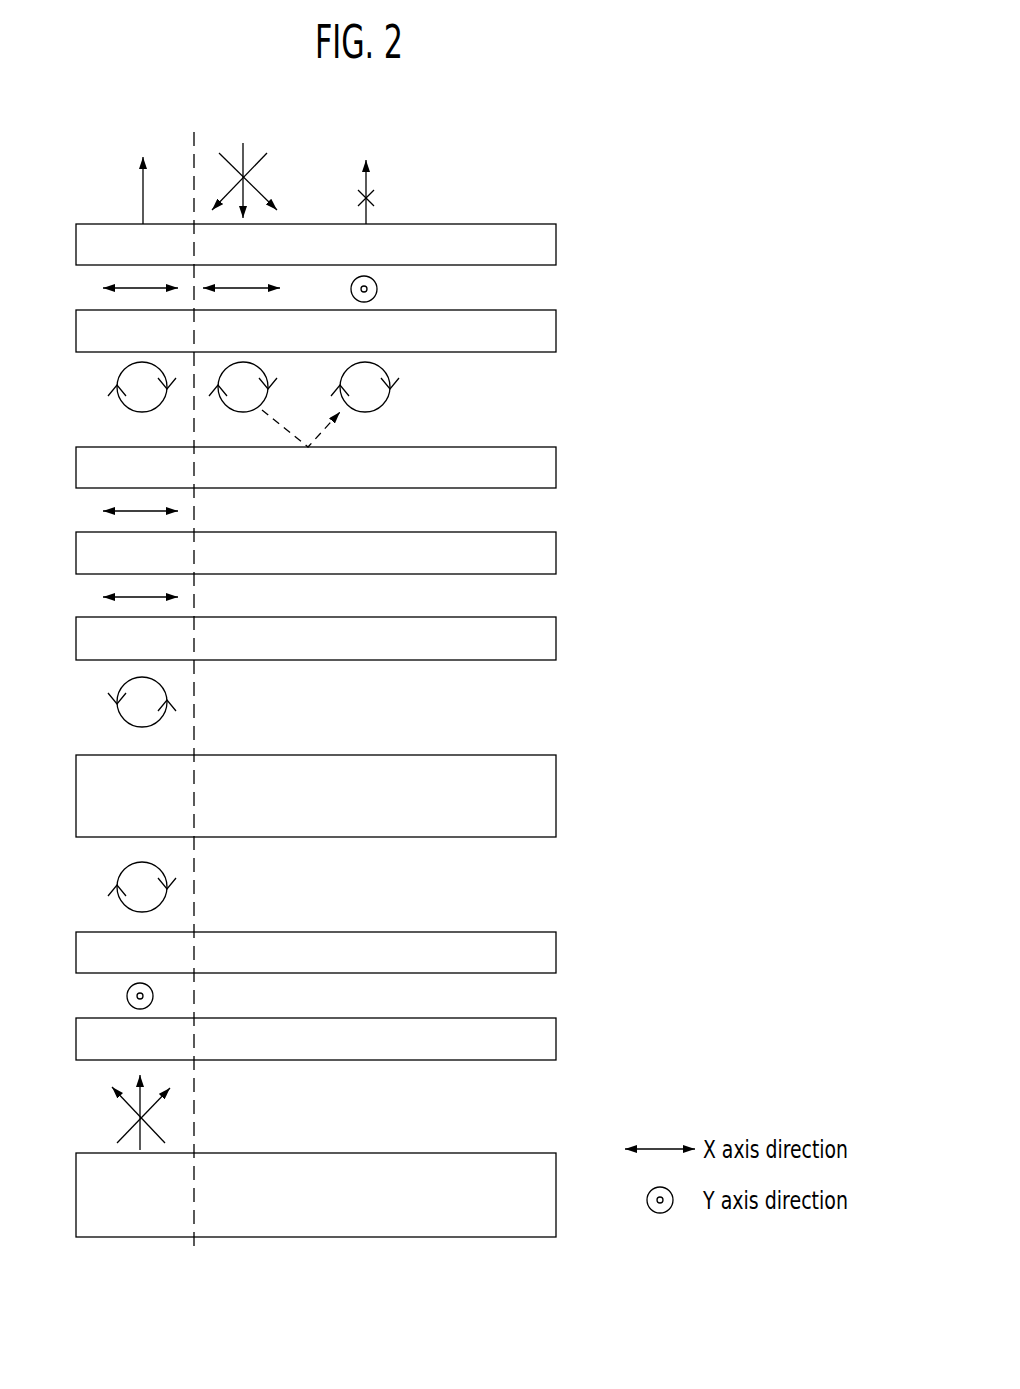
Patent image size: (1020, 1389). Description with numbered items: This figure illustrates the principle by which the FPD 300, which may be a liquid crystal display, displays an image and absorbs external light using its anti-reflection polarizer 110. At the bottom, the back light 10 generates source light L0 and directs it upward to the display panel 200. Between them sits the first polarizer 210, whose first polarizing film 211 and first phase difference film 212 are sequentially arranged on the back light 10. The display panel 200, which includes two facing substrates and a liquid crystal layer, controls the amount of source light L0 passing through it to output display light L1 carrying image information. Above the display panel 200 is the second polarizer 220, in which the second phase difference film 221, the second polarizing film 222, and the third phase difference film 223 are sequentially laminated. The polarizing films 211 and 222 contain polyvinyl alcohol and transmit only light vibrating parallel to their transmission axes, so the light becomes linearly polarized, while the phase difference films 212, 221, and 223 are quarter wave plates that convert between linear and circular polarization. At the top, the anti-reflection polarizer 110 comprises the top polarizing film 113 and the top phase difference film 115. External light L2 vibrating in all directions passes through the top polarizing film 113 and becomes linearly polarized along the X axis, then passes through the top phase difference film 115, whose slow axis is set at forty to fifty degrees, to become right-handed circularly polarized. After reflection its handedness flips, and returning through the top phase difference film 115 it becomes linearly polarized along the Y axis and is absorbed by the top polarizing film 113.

The FPD 300 is at (618, 153).
The anti-reflection polarizer 110 is at (373, 288).
The top polarizing film 113 is at (552, 247).
The top phase difference film 115 is at (347, 331).
The second polarizer 220 is at (373, 554).
The third phase difference film 223 is at (552, 468).
The second polarizing film 222 is at (552, 553).
The second phase difference film 221 is at (348, 638).
The display panel 200 is at (552, 796).
The first polarizer 210 is at (373, 996).
The first phase difference film 212 is at (552, 953).
The first polarizing film 211 is at (348, 1039).
The back light 10 is at (552, 1193).
The source light L0 is at (122, 1116).
The display light L1 is at (143, 190).
The external light L2 is at (258, 137).